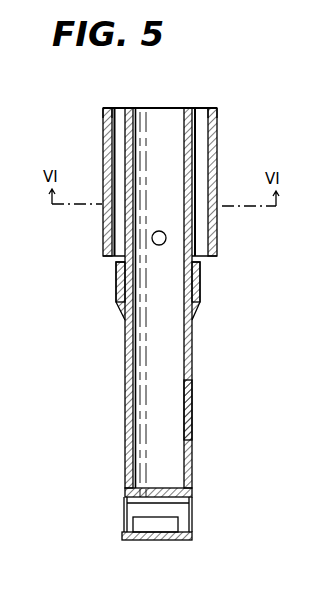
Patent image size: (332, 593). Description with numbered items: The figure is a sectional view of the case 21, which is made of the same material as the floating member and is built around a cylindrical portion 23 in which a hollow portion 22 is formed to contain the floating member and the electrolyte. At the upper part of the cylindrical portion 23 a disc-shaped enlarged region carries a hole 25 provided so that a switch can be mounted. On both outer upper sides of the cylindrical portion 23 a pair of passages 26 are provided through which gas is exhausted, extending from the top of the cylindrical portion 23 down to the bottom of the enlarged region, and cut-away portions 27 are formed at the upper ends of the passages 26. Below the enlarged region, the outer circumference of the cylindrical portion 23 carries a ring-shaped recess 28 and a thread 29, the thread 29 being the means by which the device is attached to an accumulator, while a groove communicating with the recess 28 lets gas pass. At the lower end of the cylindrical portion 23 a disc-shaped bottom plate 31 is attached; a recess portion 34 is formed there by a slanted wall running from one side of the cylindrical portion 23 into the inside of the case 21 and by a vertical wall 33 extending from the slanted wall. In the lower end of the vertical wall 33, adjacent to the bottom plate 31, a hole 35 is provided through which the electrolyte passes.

The case 21 is at (189, 108).
The hollow portion 22 is at (170, 360).
The cylindrical portion 23 is at (190, 410).
The hole 25 is at (166, 237).
The passages 26 is at (115, 150).
The cut-away portions 27 is at (104, 110).
The recess 28 is at (200, 263).
The thread 29 is at (200, 293).
The bottom plate 31 is at (163, 541).
The vertical wall 33 is at (172, 504).
The recess portion 34 is at (172, 512).
The hole 35 is at (150, 523).